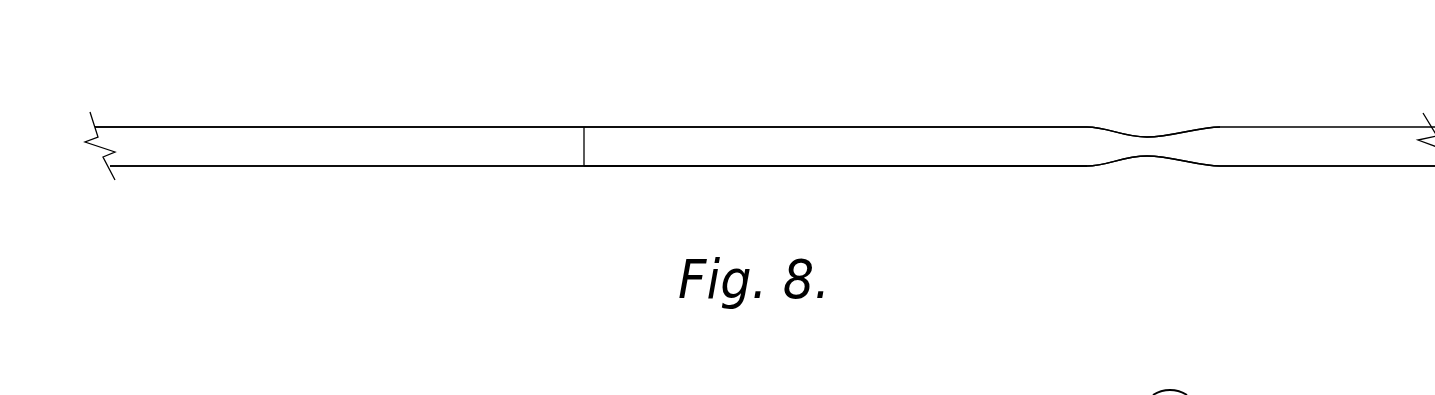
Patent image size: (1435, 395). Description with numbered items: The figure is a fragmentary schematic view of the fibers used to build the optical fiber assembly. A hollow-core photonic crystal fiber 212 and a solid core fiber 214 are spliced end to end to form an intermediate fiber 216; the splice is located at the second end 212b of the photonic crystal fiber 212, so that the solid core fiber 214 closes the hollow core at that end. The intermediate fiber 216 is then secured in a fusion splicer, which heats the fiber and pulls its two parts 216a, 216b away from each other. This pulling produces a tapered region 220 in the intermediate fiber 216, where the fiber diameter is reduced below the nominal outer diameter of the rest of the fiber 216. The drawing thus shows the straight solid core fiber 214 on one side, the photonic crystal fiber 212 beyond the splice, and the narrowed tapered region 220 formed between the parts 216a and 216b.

The photonic crystal fiber 212 is at (602, 137).
The second end 212b is at (577, 182).
The solid core fiber 214 is at (242, 132).
The intermediate fiber 216 is at (972, 110).
The first part of intermediate fiber 216a is at (867, 163).
The second part of intermediate fiber 216b is at (1302, 166).
The tapered region 220 is at (1197, 100).